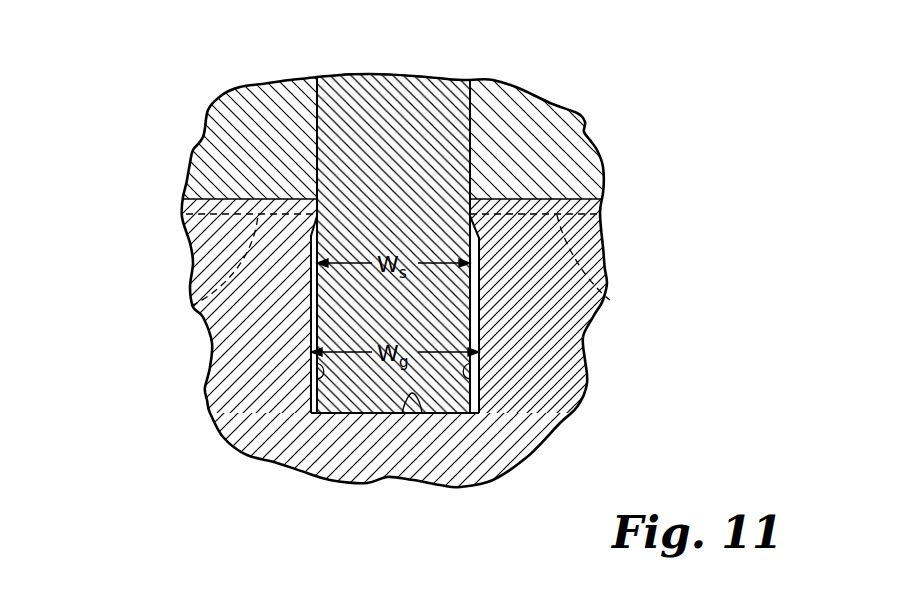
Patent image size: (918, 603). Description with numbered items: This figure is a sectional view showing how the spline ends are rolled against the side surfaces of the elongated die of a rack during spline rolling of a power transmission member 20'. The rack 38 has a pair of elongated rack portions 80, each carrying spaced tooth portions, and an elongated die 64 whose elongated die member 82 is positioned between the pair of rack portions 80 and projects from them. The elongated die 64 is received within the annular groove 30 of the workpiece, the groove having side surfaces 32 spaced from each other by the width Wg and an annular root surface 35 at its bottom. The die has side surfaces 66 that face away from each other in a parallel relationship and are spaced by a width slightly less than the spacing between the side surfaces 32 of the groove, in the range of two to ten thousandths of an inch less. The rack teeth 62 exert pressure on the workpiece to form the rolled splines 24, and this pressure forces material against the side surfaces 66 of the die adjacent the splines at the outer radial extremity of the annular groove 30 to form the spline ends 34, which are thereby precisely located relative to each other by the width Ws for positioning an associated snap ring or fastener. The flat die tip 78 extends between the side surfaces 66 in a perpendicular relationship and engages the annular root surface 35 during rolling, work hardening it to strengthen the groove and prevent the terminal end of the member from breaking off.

The power transmission member 20' is at (356, 288).
The elongated rack portions 80 is at (256, 118).
The elongated die 64 is at (392, 70).
The elongated die member 82 is at (445, 92).
The spline ends 34 is at (318, 212).
The rolled splines 24 is at (253, 198).
The rack teeth 62 is at (191, 306).
The side surfaces of the elongated die 66 is at (312, 318).
The side surfaces of the annular groove 32 is at (357, 409).
The annular groove 30 is at (262, 462).
The flat die tip 78 is at (382, 413).
The annular root surface 35 is at (421, 413).
The rack 38 is at (598, 131).